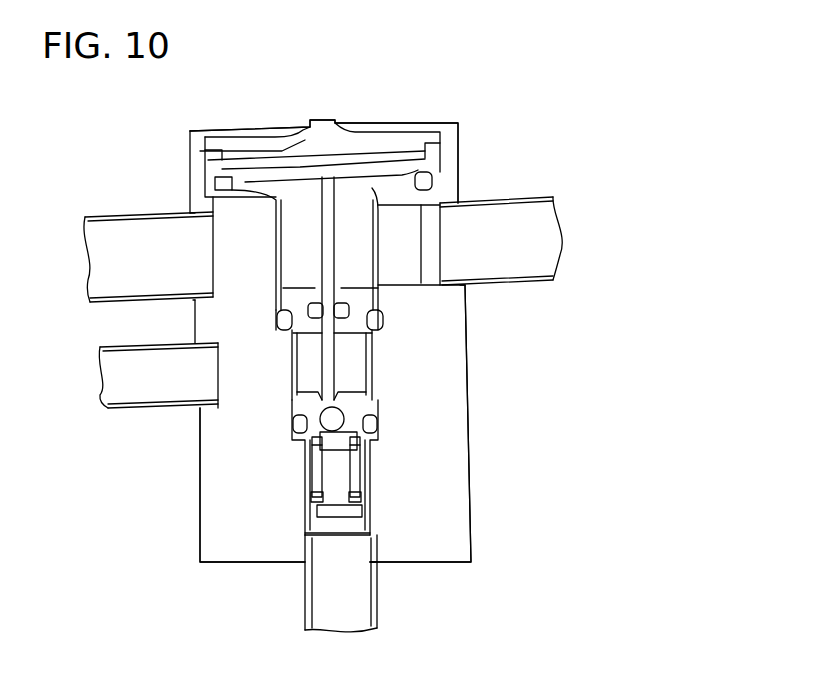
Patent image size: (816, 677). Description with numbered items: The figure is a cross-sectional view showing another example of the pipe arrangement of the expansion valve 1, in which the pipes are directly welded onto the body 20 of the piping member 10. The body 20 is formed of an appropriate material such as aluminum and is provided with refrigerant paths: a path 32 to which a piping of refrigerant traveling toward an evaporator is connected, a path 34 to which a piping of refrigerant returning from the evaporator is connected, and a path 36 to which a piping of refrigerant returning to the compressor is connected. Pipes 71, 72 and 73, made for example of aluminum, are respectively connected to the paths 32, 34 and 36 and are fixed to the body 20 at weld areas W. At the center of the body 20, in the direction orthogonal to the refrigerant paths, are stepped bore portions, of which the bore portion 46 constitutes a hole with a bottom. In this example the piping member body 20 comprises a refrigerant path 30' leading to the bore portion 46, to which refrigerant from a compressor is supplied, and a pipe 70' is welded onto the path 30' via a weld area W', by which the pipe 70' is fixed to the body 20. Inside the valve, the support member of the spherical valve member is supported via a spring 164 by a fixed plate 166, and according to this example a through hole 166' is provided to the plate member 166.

The expansion valve 1 is at (467, 95).
The piping member 10 is at (462, 138).
The body 20 is at (462, 403).
The refrigerant path 30' is at (371, 479).
The path 32 is at (245, 383).
The path 34 is at (230, 235).
The path 36 is at (420, 205).
The bore portion 46 is at (345, 525).
The pipe 71 is at (143, 407).
The pipe 72 is at (142, 213).
The pipe 73 is at (522, 202).
The pipe 70' is at (383, 590).
The spring 164 is at (353, 463).
The fixed plate 166 is at (308, 571).
The through hole 166' is at (384, 482).
The weld area W is at (325, 277).
The weld area W' is at (429, 588).